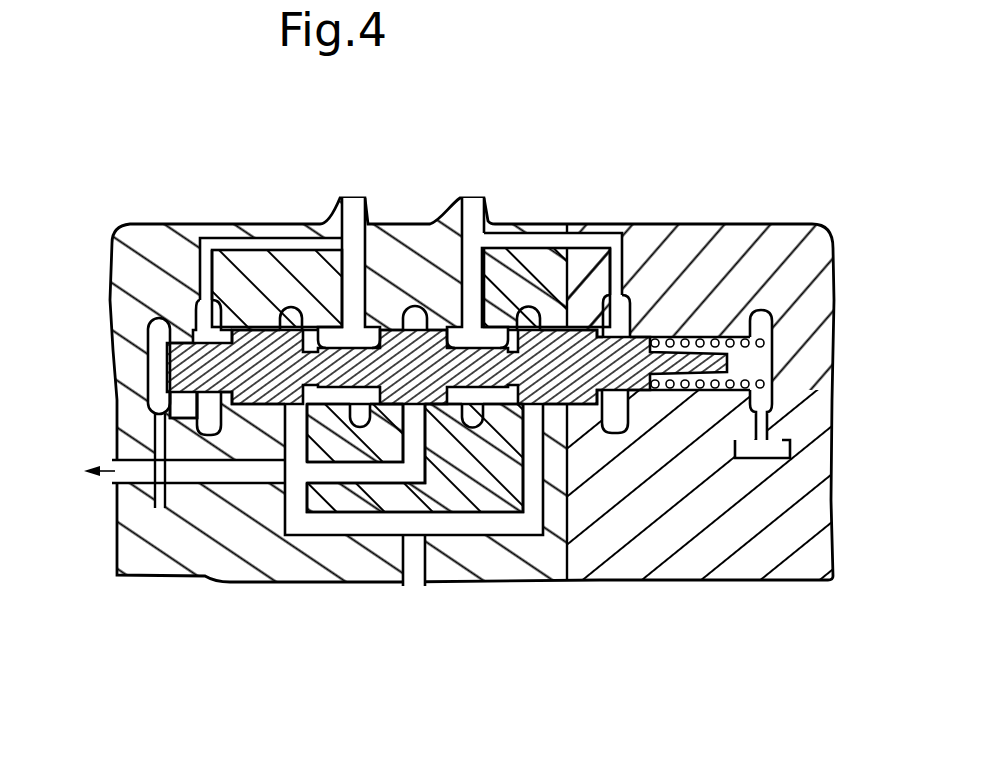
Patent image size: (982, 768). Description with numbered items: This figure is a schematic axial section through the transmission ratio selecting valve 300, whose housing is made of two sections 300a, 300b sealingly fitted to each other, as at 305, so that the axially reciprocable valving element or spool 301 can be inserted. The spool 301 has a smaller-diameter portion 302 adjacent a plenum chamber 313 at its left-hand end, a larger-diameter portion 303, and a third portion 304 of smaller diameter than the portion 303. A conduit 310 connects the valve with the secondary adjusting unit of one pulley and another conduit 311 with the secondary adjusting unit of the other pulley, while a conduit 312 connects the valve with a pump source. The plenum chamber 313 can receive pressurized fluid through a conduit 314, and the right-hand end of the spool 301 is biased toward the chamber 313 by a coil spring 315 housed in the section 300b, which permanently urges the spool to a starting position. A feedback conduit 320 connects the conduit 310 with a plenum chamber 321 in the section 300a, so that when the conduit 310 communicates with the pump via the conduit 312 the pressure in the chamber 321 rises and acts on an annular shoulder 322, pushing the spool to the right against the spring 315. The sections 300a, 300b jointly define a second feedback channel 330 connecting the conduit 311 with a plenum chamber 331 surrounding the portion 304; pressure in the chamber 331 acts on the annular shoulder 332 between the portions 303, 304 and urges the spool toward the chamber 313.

The transmission ratio selecting valve 300 is at (527, 562).
The housing section 300a is at (478, 550).
The housing section 300b is at (765, 535).
The valving element 301 is at (740, 330).
The smaller-diameter portion 302 is at (187, 413).
The larger-diameter portion 303 is at (271, 423).
The third portion 304 is at (638, 392).
The sealing joint 305 is at (568, 227).
The conduit 310 is at (348, 225).
The conduit 311 is at (470, 225).
The conduit 312 is at (413, 592).
The plenum chamber 313 is at (160, 330).
The conduit 314 is at (160, 510).
The coil spring 315 is at (748, 312).
The feedback conduit 320 is at (235, 245).
The plenum chamber 321 is at (208, 318).
The annular shoulder 322 is at (233, 462).
The second feedback conduit 330 is at (615, 236).
The plenum chamber 331 is at (615, 318).
The annular shoulder 332 is at (618, 433).